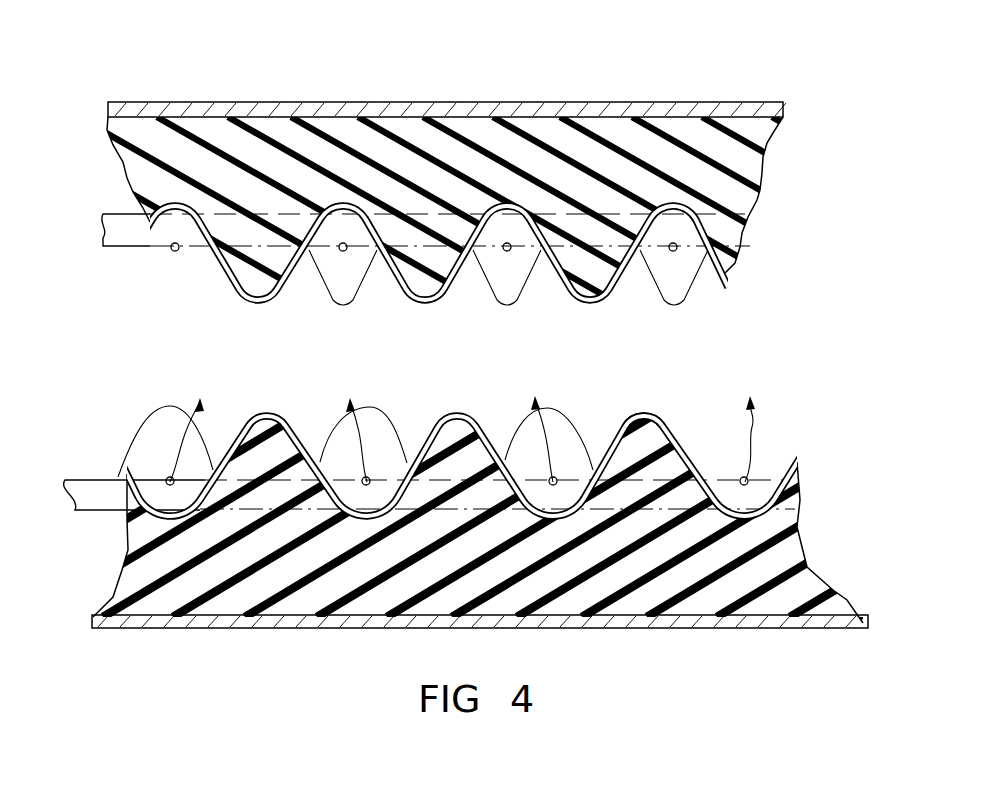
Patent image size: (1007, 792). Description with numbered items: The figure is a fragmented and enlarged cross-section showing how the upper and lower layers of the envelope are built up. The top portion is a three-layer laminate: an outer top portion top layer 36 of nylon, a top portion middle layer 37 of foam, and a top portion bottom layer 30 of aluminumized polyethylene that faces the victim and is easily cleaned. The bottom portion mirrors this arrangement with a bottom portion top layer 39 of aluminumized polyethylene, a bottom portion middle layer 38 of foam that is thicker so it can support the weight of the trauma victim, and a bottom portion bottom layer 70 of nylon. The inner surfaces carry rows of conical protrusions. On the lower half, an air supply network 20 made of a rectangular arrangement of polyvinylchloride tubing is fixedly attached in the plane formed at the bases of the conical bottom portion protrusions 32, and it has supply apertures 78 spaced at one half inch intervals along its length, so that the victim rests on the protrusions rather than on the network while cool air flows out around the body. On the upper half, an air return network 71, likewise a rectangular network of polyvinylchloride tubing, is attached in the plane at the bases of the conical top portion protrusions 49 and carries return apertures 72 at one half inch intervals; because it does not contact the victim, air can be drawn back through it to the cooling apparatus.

The top portion top layer 36 is at (490, 103).
The top portion middle layer 37 is at (737, 200).
The top portion bottom layer 30 is at (463, 267).
The air return network 71 is at (303, 270).
The conical top portion protrusions 49 is at (638, 262).
The return apertures 72 is at (676, 252).
The air supply network 20 is at (322, 457).
The supply apertures 78 is at (570, 462).
The conical bottom portion protrusions 32 is at (660, 410).
The bottom portion top layer 39 is at (693, 460).
The bottom portion middle layer 38 is at (787, 553).
The bottom portion bottom layer 70 is at (290, 628).